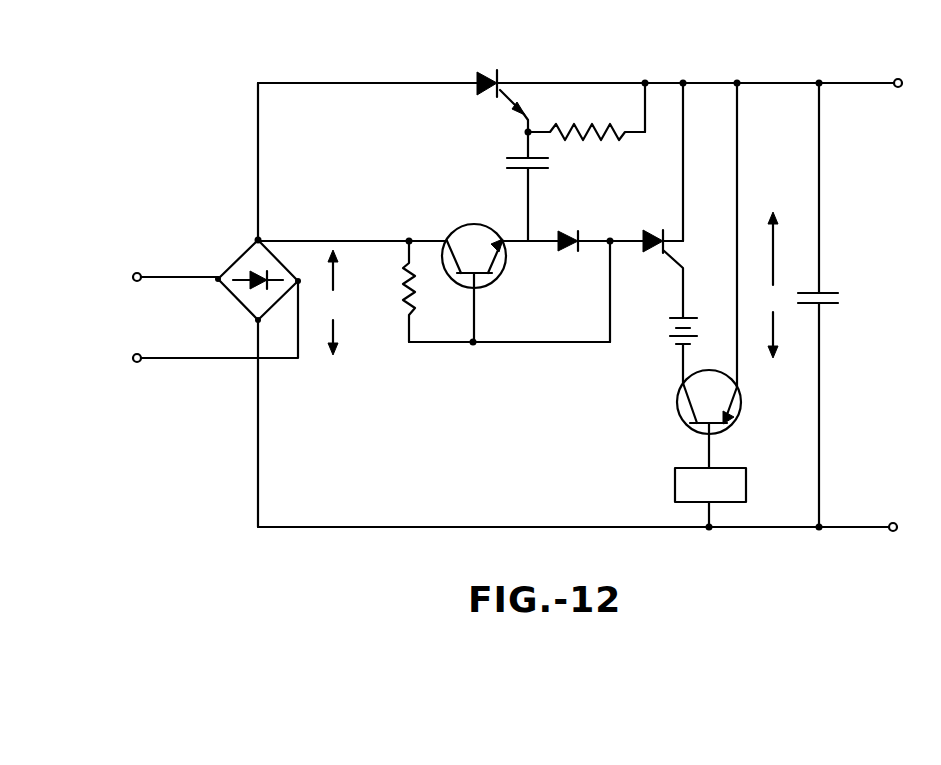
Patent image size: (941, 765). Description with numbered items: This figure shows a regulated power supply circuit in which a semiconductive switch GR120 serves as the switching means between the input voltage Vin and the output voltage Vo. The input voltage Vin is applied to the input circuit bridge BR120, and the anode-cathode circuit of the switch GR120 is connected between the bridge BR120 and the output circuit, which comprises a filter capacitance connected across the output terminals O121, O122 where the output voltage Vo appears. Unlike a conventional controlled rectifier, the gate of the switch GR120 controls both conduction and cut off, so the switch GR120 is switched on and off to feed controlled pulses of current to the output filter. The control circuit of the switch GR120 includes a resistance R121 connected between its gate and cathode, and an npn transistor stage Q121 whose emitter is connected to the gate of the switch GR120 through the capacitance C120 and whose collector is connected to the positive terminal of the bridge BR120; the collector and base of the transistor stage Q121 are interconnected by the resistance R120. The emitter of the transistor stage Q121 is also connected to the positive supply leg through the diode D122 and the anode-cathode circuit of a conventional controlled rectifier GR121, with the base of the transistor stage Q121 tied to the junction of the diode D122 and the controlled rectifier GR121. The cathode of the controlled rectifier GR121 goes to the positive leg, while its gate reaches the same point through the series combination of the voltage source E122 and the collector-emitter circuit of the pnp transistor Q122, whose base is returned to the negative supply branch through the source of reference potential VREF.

The input circuit bridge BR120 is at (215, 301).
The input voltage Vin is at (333, 302).
The resistance R120 is at (393, 291).
The npn transistor stage Q121 is at (492, 283).
The capacitance C120 is at (673, 305).
The semiconductive switch GR120 is at (511, 89).
The resistance R121 is at (586, 123).
The diode D122 is at (574, 230).
The conventional controlled rectifier GR121 is at (657, 263).
The voltage source E122 is at (669, 341).
The pnp transistor Q122 is at (729, 419).
The source of reference potential VREF is at (710, 488).
The output voltage Vo is at (772, 285).
The output terminal O121 is at (917, 71).
The output terminal O122 is at (914, 544).